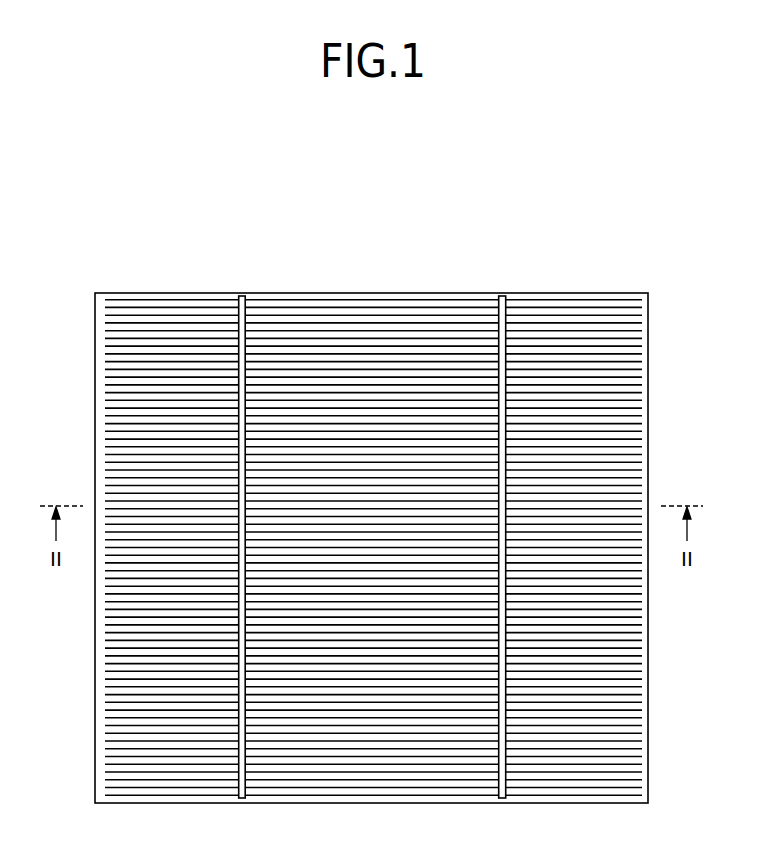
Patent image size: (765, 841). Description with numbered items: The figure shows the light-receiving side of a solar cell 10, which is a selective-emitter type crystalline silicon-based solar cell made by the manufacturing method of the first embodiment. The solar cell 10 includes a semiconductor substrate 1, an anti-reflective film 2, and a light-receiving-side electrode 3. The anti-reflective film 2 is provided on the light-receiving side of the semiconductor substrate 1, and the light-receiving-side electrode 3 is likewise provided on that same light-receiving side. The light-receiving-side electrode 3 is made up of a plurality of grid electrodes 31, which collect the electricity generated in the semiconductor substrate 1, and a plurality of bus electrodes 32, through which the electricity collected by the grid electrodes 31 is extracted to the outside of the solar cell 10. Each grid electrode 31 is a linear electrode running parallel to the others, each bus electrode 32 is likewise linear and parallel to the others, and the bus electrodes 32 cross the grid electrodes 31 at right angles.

The solar cell 10 is at (654, 211).
The semiconductor substrate 1 is at (88, 757).
The anti-reflective film 2 is at (92, 690).
The light-receiving-side electrode 3 is at (260, 228).
The grid electrode 31 is at (158, 313).
The bus electrode 32 is at (234, 288).